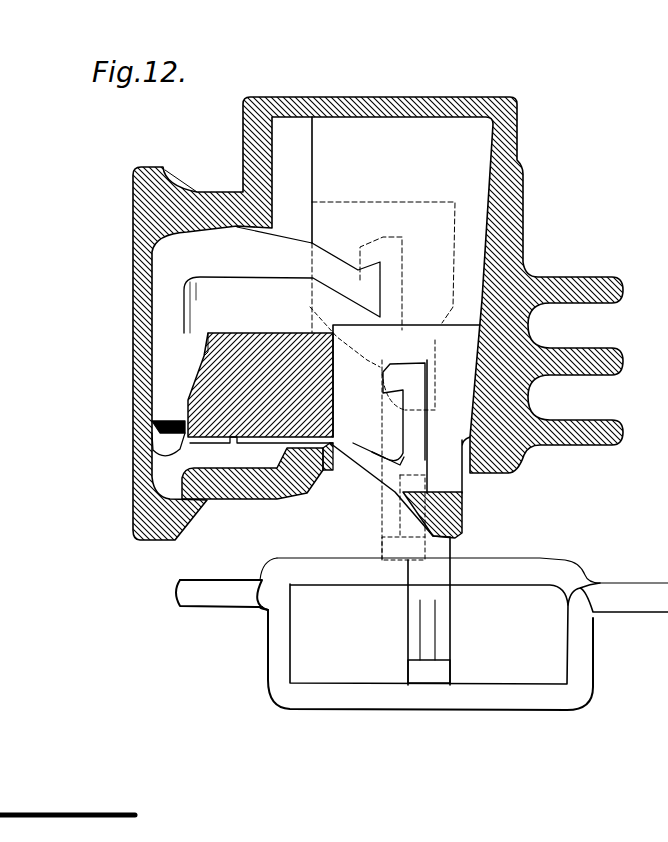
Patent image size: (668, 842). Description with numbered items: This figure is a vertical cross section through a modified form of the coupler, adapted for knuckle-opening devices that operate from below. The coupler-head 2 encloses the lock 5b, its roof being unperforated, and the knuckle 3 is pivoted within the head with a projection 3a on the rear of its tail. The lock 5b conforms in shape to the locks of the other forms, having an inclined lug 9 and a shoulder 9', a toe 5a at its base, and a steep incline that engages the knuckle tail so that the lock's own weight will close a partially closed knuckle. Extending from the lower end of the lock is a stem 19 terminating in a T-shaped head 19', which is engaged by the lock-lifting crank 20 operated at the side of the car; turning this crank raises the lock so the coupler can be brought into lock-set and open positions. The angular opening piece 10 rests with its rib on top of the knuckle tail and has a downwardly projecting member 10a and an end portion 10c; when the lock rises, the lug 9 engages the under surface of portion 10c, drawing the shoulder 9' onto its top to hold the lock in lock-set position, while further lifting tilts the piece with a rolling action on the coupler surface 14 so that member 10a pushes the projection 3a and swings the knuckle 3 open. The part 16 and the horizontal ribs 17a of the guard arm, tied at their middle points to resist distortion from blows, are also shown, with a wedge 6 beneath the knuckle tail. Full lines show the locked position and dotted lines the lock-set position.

The coupler-head 2 is at (133, 333).
The knuckle 3 is at (327, 408).
The projection on the rear of the knuckle tail 3a is at (259, 449).
The toe of the lock 5a is at (450, 513).
The lock 5b is at (406, 409).
The wedge 6 is at (337, 455).
The inclined projection (lug) on the lock 9 is at (380, 422).
The shoulder on the lock 9' is at (395, 450).
The opening piece 10 is at (198, 246).
The downwardly projecting opening member 10a is at (163, 412).
The end portion of the forwardly projecting member 10c is at (319, 267).
The upper surface of the coupler head 14 is at (237, 227).
The ring 16 is at (247, 462).
The horizontal ribs of the guard arm 17a is at (603, 297).
The stem 19 is at (430, 580).
The T-shaped head 19' is at (446, 669).
The lock-lifting crank 20 is at (480, 700).